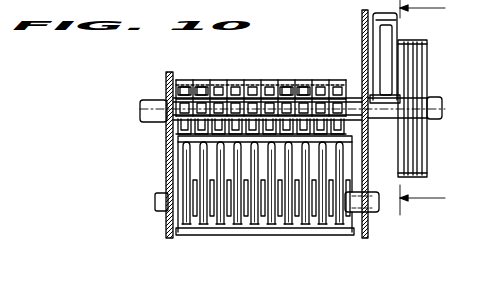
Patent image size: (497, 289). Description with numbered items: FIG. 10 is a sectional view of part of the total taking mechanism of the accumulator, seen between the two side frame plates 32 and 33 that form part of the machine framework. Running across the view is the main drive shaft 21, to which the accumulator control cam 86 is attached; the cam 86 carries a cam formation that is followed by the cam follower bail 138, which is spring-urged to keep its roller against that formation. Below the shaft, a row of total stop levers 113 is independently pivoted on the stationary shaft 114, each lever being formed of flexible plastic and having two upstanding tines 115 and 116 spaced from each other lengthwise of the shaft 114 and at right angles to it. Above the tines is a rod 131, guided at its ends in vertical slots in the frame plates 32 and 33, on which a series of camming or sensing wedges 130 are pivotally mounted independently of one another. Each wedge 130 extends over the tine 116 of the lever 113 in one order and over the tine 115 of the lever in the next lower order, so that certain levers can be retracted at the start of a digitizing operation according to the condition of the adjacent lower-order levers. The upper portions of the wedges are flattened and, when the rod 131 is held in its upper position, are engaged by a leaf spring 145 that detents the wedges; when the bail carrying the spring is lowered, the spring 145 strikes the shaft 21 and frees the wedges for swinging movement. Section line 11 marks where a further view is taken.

The section line 11- 11 is at (422, 107).
The main drive shaft 21 is at (429, 124).
The side frame plate 32 is at (166, 170).
The side frame plate 33 is at (362, 22).
The accumulator control cam 86 is at (428, 156).
The total stop lever 113 is at (234, 232).
The stationary shaft 114 is at (353, 213).
The tine 115 is at (287, 82).
The tine 116 is at (305, 82).
The sensing wedge 130 is at (246, 81).
The rod 131 is at (186, 81).
The cam follower bail 138 is at (397, 22).
The leaf spring 145 is at (205, 82).